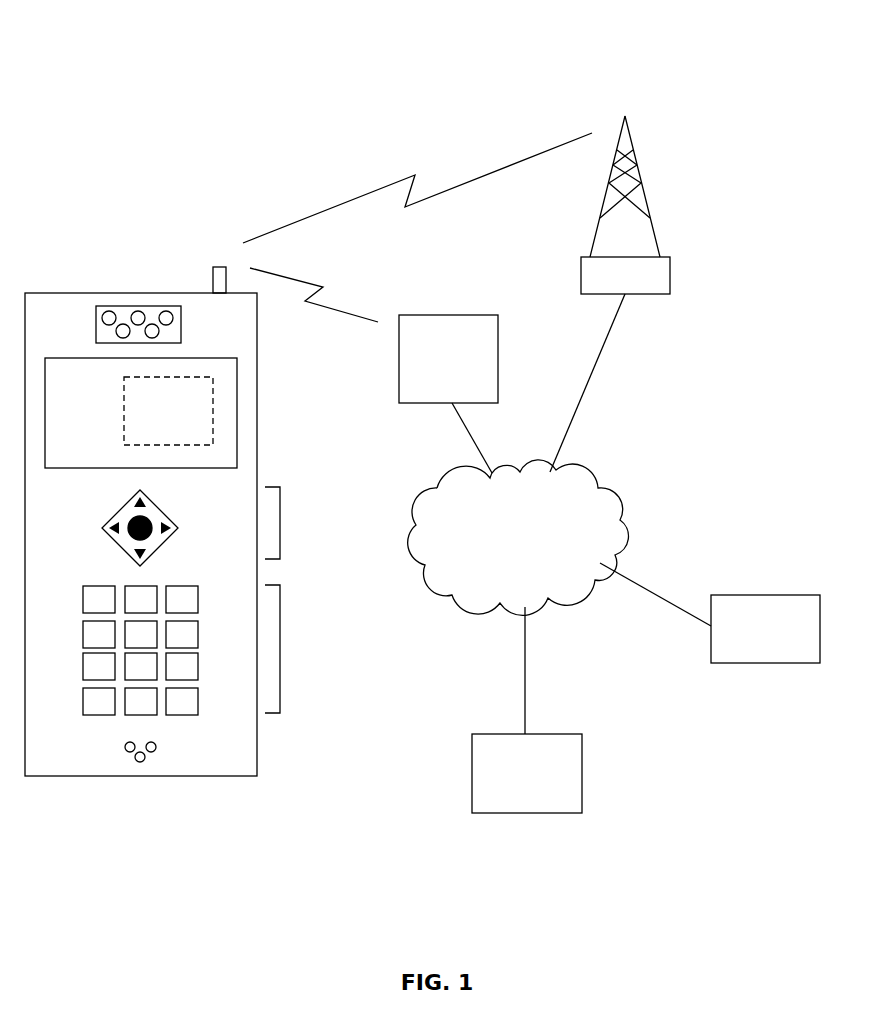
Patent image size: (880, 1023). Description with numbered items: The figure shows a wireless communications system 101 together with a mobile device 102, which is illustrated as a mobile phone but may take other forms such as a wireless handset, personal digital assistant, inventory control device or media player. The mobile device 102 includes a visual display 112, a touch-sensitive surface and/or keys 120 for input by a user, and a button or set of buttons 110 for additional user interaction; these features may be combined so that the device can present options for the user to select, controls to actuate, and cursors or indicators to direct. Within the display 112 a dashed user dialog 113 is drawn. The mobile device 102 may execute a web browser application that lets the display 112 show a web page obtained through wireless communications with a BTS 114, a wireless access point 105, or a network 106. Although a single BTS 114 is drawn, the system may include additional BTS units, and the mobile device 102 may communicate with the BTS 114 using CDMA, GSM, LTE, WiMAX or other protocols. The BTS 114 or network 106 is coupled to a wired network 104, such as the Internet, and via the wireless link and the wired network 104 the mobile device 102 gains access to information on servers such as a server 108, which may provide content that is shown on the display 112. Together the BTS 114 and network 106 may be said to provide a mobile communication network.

The wireless communications system 101 is at (459, 98).
The mobile device 102 is at (68, 294).
The wired network 104 is at (522, 813).
The wireless access point 105 is at (458, 314).
The network 106 is at (606, 489).
The server 108 is at (763, 663).
The set of buttons 110 is at (280, 506).
The visual display 112 is at (237, 404).
The user dialog 113 is at (124, 410).
The BTS 114 is at (670, 268).
The keys 120 is at (280, 620).